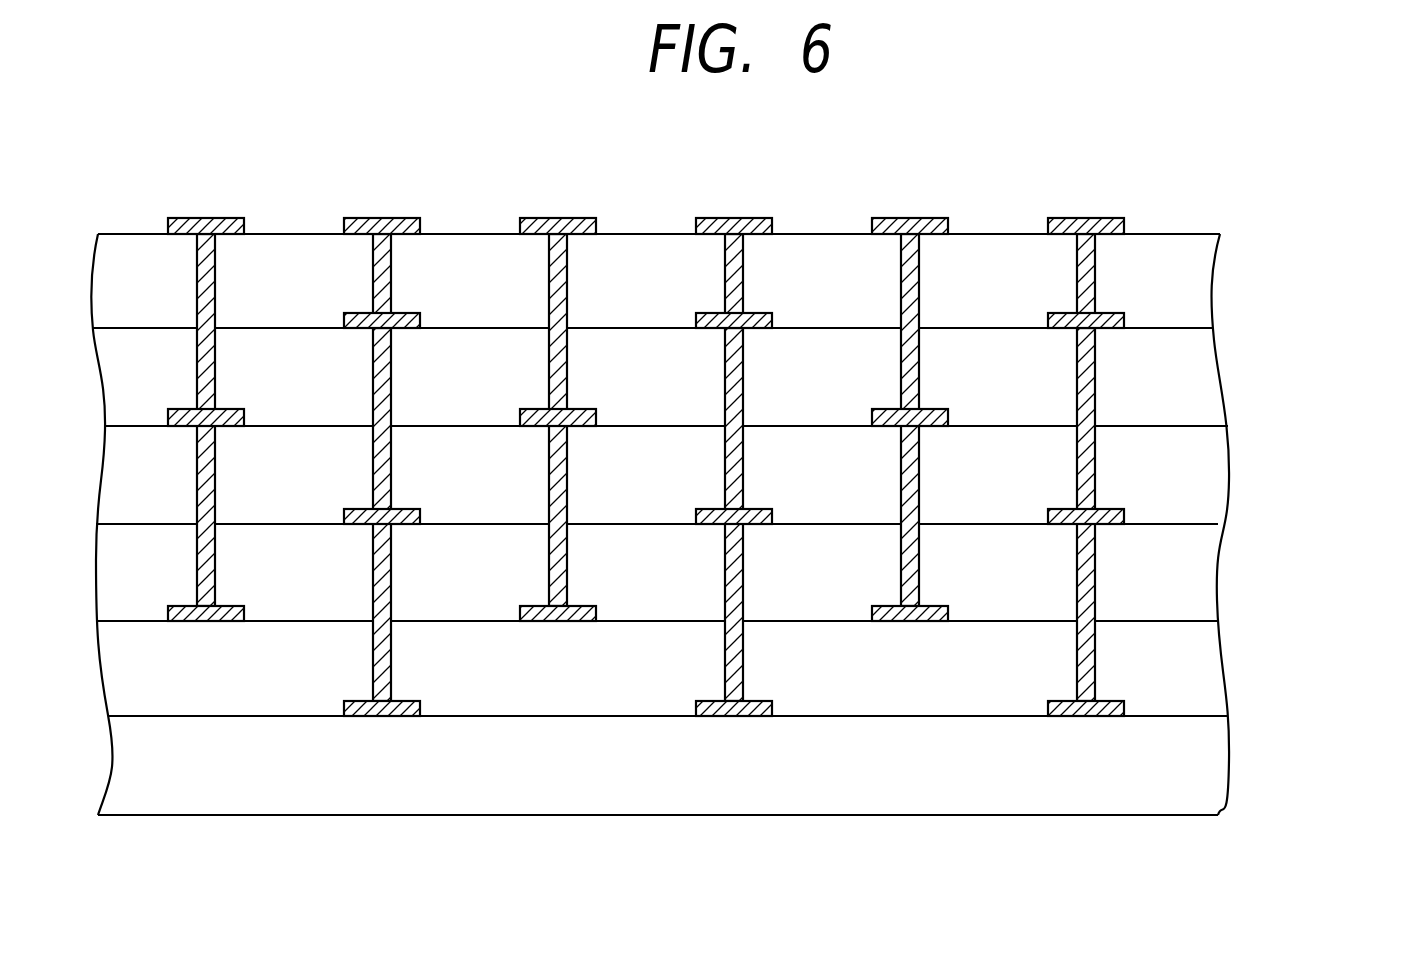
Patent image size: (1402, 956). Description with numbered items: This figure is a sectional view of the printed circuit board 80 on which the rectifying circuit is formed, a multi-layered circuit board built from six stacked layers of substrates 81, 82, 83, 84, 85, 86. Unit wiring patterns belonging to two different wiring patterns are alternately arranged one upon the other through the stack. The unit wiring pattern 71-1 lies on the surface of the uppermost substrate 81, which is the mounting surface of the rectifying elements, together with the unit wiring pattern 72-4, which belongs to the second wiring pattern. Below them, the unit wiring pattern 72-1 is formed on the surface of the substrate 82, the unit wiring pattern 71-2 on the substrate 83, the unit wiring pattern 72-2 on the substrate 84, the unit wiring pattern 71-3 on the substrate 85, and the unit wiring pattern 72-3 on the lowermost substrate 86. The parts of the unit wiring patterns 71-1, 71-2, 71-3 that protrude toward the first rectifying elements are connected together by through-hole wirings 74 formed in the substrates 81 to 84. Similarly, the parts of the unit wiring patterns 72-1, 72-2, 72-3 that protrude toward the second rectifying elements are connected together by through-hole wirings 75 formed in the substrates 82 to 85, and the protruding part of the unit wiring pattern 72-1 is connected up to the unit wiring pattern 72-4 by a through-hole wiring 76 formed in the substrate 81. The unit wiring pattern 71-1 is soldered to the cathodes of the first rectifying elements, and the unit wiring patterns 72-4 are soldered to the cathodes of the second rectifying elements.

The unit wiring pattern 71-1 is at (181, 217).
The unit wiring pattern 71-2 is at (181, 408).
The unit wiring pattern 71-3 is at (181, 605).
The unit wiring pattern 72-1 is at (358, 312).
The unit wiring pattern 72-2 is at (358, 508).
The unit wiring pattern 72-3 is at (358, 700).
The unit wiring pattern 72-4 is at (358, 217).
The through-hole wiring 74 is at (215, 375).
The through-hole wiring 75 is at (391, 486).
The through-hole wiring 76 is at (391, 291).
The printed circuit board 80 is at (1322, 830).
The substrate 81 is at (1183, 286).
The substrate 82 is at (1183, 373).
The substrate 83 is at (1183, 468).
The substrate 84 is at (1183, 571).
The substrate 85 is at (1183, 658).
The substrate 86 is at (1183, 766).